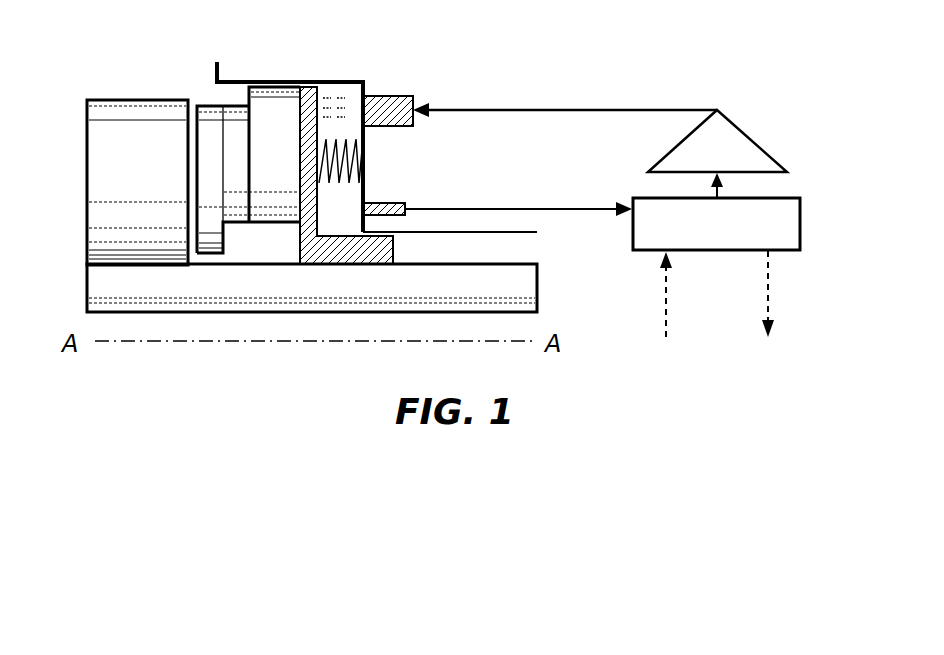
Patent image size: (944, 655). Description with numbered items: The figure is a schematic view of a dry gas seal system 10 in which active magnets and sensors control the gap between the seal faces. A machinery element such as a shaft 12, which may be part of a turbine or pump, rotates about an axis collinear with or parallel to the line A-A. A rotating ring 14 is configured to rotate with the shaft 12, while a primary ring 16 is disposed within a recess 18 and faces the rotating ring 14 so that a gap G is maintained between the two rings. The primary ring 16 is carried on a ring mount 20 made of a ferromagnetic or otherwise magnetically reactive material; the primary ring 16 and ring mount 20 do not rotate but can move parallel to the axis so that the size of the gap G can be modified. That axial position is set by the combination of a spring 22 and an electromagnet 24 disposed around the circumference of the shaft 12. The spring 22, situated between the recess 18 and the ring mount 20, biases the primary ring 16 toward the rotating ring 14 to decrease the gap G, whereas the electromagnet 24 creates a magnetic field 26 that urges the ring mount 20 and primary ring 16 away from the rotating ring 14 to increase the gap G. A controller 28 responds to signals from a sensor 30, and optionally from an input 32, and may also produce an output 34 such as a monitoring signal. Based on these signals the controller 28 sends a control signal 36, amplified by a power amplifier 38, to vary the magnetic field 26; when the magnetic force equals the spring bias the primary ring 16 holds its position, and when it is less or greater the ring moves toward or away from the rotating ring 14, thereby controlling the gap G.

The dry gas seal system 10 is at (449, 29).
The shaft 12 is at (95, 286).
The rotating ring 14 is at (93, 137).
The primary ring 16 is at (272, 97).
The recess 18 is at (236, 88).
The ring mount 20 is at (308, 92).
The spring 22 is at (350, 163).
The electromagnet 24 is at (400, 97).
The magnetic field 26 is at (341, 82).
The controller 28 is at (790, 226).
The sensor 30 is at (392, 203).
The input 32 is at (667, 311).
The output signal 34 is at (769, 310).
The control signal 36 is at (535, 109).
The power amplifier 38 is at (735, 136).
The gap G is at (192, 103).